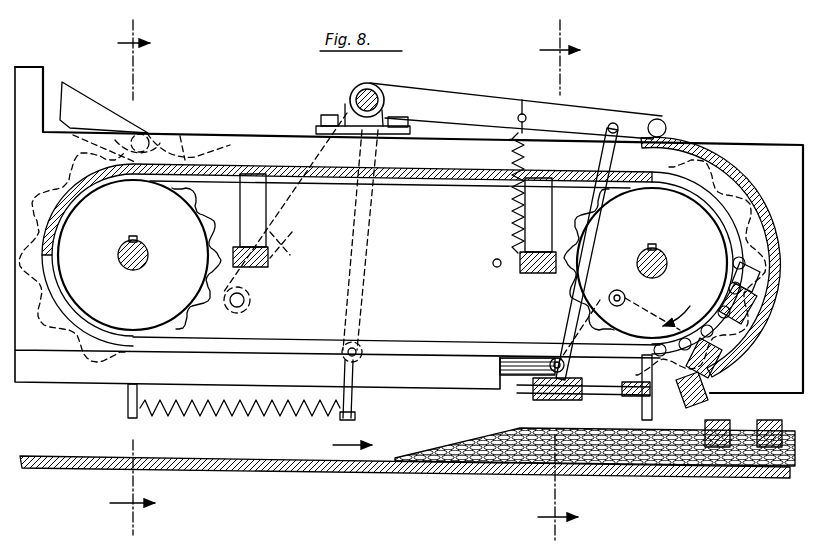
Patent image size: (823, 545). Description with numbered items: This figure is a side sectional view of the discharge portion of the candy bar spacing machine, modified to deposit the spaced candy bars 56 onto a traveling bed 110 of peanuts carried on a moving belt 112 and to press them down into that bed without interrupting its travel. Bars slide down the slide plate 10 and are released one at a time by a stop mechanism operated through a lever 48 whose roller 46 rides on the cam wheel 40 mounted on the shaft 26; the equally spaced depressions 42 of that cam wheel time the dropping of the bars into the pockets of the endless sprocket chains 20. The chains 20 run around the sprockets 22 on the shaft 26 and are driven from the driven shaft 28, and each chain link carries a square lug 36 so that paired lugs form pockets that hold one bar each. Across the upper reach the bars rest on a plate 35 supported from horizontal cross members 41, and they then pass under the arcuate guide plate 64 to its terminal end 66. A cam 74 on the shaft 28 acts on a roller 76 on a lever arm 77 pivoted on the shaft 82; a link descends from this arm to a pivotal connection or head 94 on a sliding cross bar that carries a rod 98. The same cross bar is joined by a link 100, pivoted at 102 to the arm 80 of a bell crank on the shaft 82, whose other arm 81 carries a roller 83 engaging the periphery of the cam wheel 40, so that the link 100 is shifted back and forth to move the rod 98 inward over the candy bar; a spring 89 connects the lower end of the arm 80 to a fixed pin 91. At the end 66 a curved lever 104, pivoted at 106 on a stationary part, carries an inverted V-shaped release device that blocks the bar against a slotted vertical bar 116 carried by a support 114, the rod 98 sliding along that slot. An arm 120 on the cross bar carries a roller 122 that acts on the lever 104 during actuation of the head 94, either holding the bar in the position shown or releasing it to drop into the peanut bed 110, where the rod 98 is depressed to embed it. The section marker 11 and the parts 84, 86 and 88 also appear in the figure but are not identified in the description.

The slide plate 10 is at (565, 24).
The section line 11- 11 is at (142, 24).
The sprocket chain 20 is at (452, 185).
The sprocket 22 is at (218, 325).
The shaft 26 is at (128, 264).
The driven shaft 28 is at (660, 262).
The plate 35 is at (405, 178).
The lug 36 is at (740, 343).
The cam wheel 40 is at (185, 135).
The horizontal cross member 41 is at (523, 268).
The cam-like depression 42 is at (233, 135).
The roller 46 is at (150, 134).
The lever 48 is at (77, 100).
The candy bar 56 is at (663, 418).
The arcuate guide plate 64 is at (740, 175).
The terminal end of guide plate 66 is at (737, 364).
The cam 74 is at (695, 160).
The roller 76 is at (660, 120).
The lever arm 77 is at (590, 112).
The bell crank arm 80 is at (372, 262).
The bell crank arm 81 is at (283, 250).
The shaft 82 is at (375, 96).
The roller 83 is at (250, 298).
The spring 84 is at (505, 228).
The spring anchor 86 is at (493, 263).
The spring hanger 88 is at (522, 100).
The spring 89 is at (220, 414).
The fixed pin 91 is at (140, 420).
The head 94 is at (552, 348).
The rod 98 is at (618, 388).
The link 100 is at (425, 388).
The pivotal connection 102 is at (362, 346).
The curved lever 104 is at (743, 391).
The pivot 106 is at (708, 400).
The bed of peanuts 110 is at (740, 462).
The traveling belt 112 is at (618, 474).
The support 114 is at (600, 392).
The vertical bar 116 is at (575, 410).
The arm 120 is at (625, 298).
The roller 122 is at (614, 292).